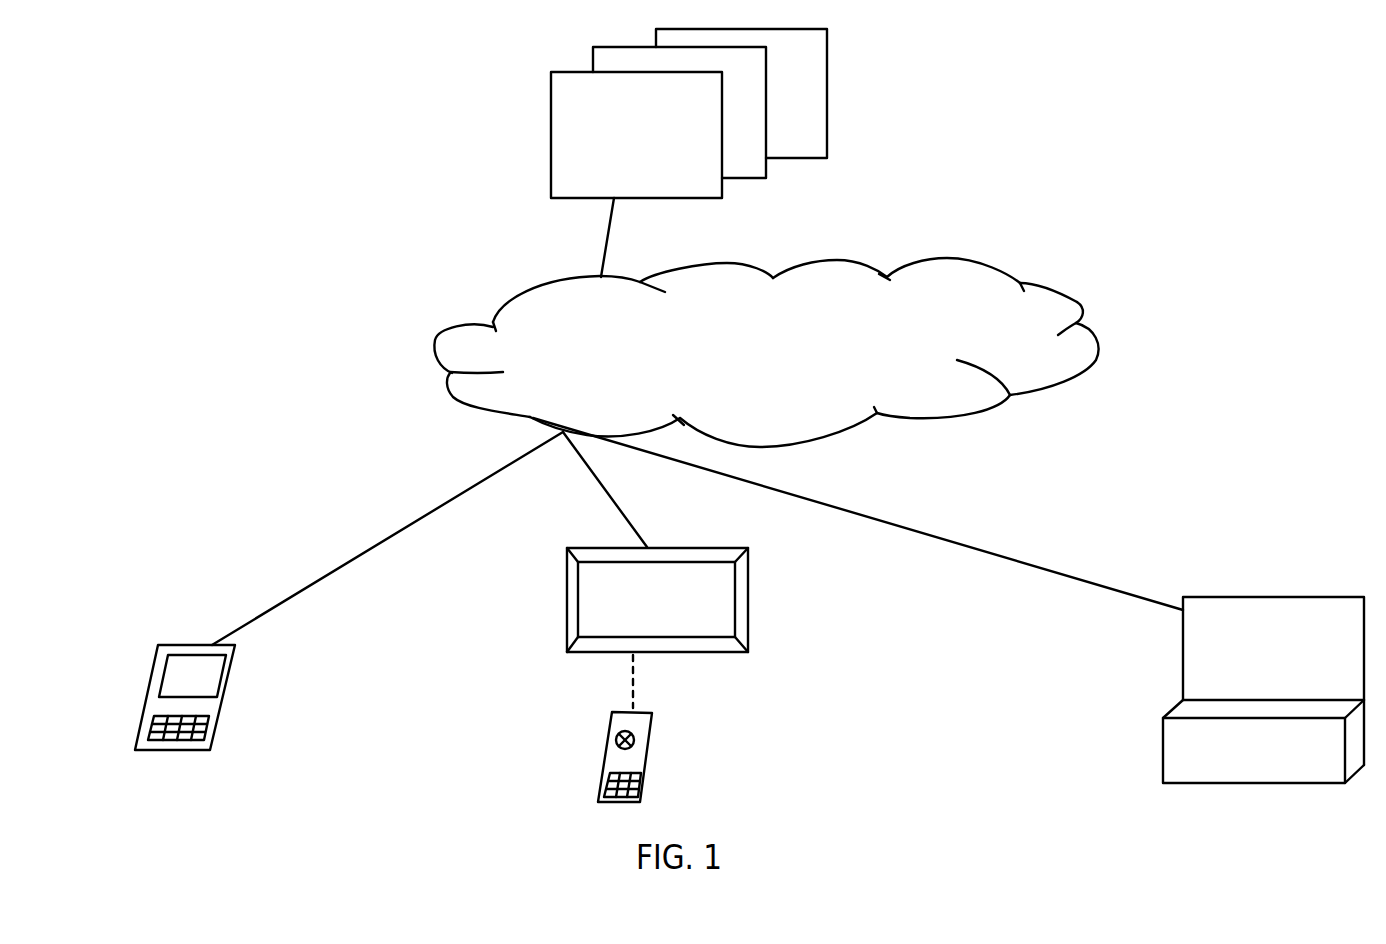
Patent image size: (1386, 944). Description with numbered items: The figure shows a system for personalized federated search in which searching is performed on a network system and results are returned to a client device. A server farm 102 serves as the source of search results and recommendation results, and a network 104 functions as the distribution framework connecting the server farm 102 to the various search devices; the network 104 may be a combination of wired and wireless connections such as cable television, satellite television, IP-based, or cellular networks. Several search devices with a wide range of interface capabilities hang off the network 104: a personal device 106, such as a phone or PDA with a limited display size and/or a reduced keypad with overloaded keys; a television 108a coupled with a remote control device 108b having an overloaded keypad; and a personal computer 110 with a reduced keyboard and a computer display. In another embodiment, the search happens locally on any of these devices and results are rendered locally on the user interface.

The server farm 102 is at (783, 153).
The network 104 is at (1077, 302).
The personal device 106 is at (227, 698).
The television 108a is at (562, 602).
The remote control device 108b is at (603, 757).
The personal computer 110 is at (1283, 597).